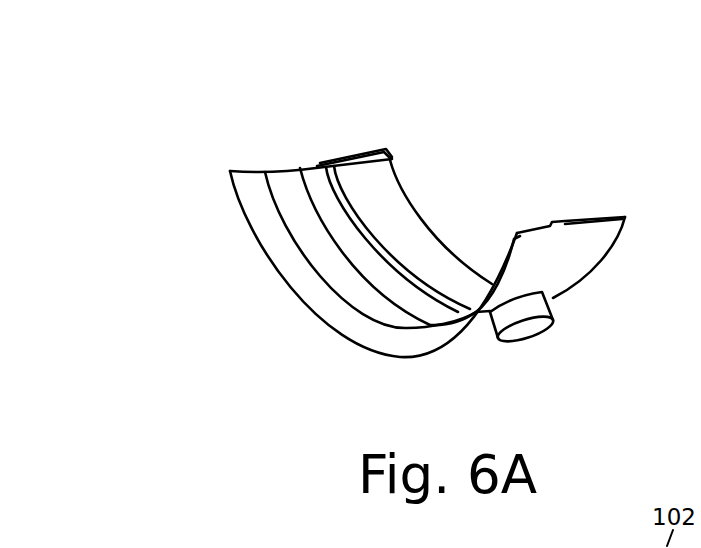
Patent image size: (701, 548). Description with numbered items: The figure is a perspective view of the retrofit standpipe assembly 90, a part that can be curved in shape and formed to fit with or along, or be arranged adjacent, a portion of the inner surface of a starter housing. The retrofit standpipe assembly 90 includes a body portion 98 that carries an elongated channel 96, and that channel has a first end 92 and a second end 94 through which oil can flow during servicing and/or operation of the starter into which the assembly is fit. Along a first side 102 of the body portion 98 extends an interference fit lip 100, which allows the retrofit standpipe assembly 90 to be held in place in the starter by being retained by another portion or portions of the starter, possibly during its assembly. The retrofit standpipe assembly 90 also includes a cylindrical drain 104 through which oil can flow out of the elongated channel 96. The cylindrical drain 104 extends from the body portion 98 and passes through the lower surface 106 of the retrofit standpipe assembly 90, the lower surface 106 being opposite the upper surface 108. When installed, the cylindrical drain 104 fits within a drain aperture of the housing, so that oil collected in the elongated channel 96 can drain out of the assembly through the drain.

The retrofit standpipe assembly 90 is at (594, 110).
The first end 92 is at (390, 144).
The second end 94 is at (623, 199).
The elongated channel 96 is at (353, 143).
The body portion 98 is at (288, 185).
The interference fit lip 100 is at (318, 294).
The first side 102 is at (258, 252).
The cylindrical drain 104 is at (510, 320).
The lower surface 106 is at (585, 300).
The upper surface 108 is at (409, 212).